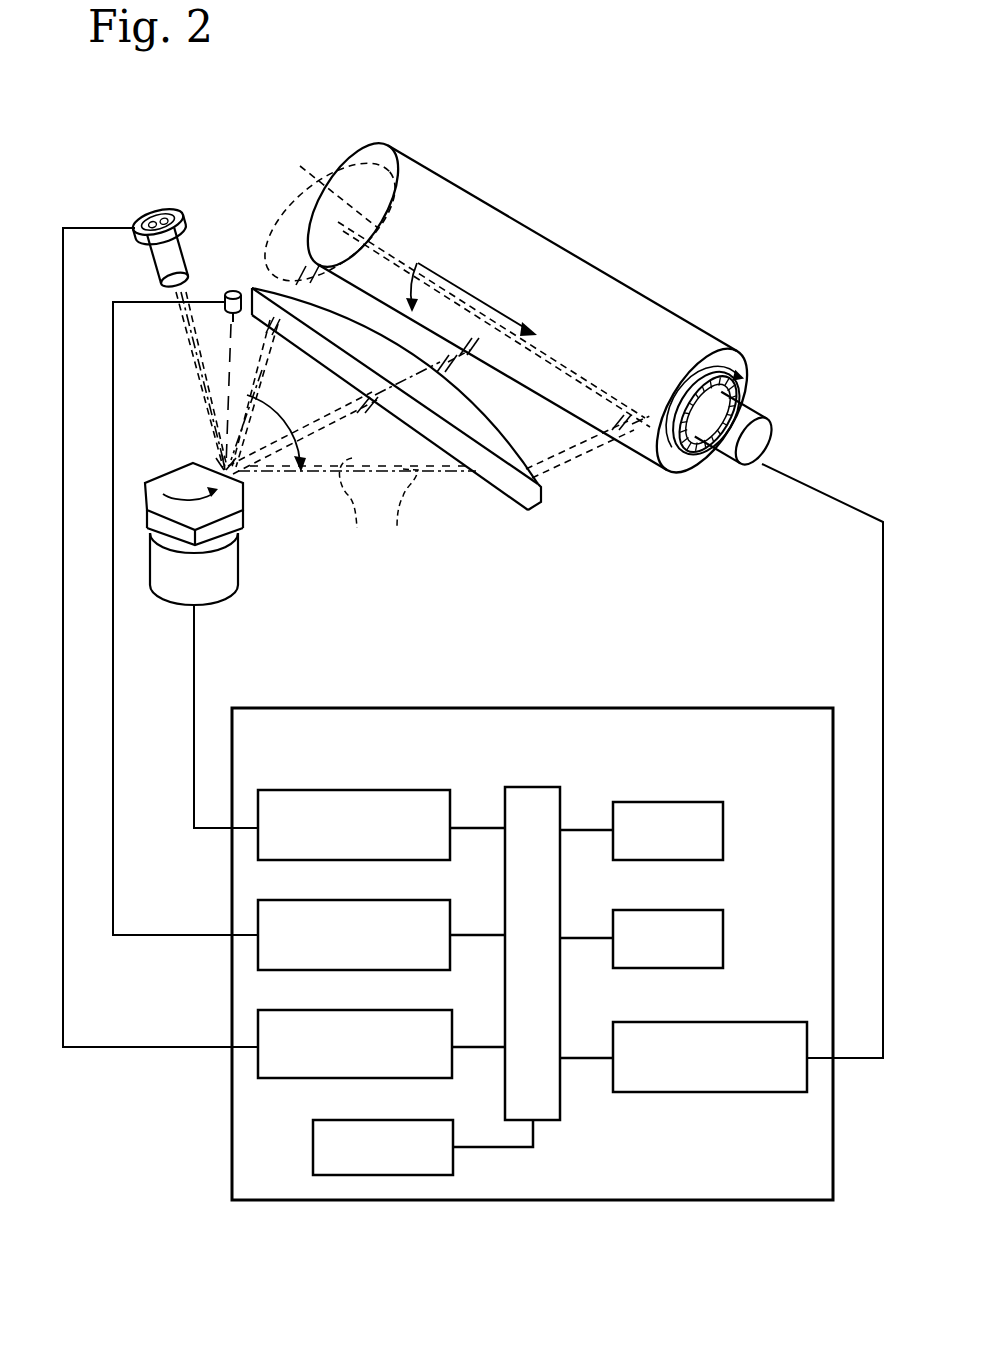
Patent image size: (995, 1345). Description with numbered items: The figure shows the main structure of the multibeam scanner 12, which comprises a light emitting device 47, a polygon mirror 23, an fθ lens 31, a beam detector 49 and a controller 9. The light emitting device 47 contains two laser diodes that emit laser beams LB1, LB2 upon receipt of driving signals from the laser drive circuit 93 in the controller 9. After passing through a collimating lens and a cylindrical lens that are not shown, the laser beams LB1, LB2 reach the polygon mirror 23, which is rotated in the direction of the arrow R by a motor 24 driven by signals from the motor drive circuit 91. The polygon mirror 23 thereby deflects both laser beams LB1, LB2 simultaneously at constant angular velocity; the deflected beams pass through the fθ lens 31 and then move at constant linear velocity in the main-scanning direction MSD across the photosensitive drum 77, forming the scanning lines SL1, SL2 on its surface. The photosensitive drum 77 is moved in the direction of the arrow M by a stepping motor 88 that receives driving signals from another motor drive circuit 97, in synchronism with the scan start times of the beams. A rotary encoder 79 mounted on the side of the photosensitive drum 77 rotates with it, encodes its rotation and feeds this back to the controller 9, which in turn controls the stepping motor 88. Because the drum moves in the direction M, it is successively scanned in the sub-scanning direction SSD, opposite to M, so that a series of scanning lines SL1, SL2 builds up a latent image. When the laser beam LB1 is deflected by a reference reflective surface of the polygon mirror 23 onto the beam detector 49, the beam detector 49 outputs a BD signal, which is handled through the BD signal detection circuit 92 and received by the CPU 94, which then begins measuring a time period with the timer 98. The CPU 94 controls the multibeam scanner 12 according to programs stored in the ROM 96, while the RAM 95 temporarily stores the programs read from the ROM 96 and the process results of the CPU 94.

The controller 9 is at (585, 706).
The multibeam scanner 12 is at (396, 591).
The polygon mirror 23 is at (245, 508).
The motor 24 is at (238, 555).
The fθ lens 31 is at (512, 492).
The light emitting device 47 is at (139, 196).
The beam detector 49 is at (232, 290).
The photosensitive drum 77 is at (682, 321).
The rotary encoder 79 is at (745, 384).
The stepping motor 88 is at (765, 447).
The motor drive circuit 91 is at (397, 789).
The BD signal detection circuit 92 is at (397, 899).
The laser drive circuit 93 is at (397, 1009).
The CPU 94 is at (560, 1107).
The RAM 95 is at (697, 802).
The ROM 96 is at (697, 910).
The motor drive circuit 97 is at (724, 1022).
The timer 98 is at (397, 1120).
The scanning line SL1 is at (456, 278).
The scanning line SL2 is at (438, 296).
The laser beam LB1 is at (354, 505).
The laser beam LB2 is at (407, 511).
The sub-scanning direction SSD is at (426, 272).
The main-scanning direction MSD is at (510, 304).
The rotation direction of polygon mirror R is at (171, 473).
The moving direction of photosensitive drum M is at (707, 487).